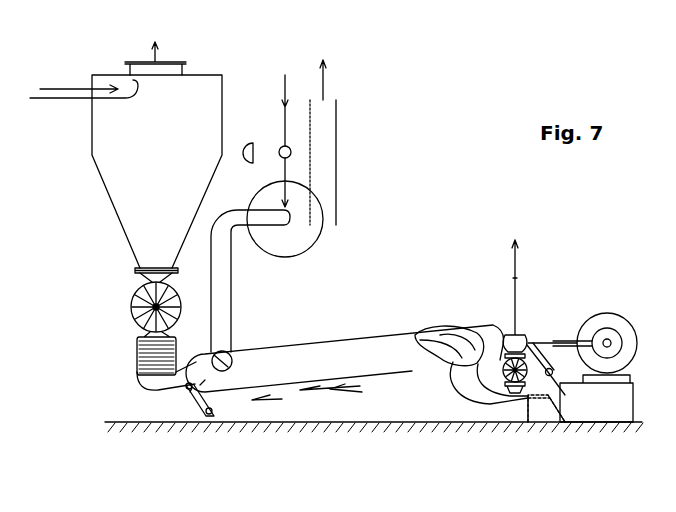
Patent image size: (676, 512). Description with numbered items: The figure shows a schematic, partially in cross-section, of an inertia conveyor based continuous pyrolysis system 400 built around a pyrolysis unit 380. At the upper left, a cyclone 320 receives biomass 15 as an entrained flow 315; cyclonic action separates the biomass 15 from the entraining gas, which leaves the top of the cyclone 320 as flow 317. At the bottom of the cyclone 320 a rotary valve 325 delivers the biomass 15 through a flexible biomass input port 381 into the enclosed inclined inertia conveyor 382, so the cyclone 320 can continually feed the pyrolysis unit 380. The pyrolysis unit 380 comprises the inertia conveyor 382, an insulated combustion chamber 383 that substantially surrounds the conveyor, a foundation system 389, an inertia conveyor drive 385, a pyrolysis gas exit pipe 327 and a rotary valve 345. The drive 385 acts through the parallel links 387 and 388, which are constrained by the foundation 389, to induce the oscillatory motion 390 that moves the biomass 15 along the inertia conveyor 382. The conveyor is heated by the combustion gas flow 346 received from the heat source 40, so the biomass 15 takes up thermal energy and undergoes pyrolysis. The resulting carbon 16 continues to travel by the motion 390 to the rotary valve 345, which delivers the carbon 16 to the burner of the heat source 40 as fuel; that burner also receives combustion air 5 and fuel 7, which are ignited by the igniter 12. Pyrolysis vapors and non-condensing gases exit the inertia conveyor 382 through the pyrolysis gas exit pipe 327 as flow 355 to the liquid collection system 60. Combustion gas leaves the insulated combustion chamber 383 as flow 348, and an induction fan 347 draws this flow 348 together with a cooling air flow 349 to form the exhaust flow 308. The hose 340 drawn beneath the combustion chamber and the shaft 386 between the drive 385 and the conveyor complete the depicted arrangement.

The combustion air 5 is at (277, 66).
The fuel 7 is at (570, 417).
The igniter 12 is at (578, 399).
The biomass 15 is at (135, 239).
The carbon 16 is at (525, 335).
The heat source 40 is at (497, 432).
The liquid collection system 60 is at (523, 224).
The exhaust flow 308 is at (337, 62).
The entrained flow 315 is at (88, 76).
The flow 317 is at (170, 41).
The cyclone 320 is at (103, 133).
The rotary valve 325 is at (123, 295).
The pyrolysis gas exit pipe 327 is at (516, 297).
The hose 340 is at (470, 390).
The rotary valve 345 is at (290, 190).
The combustion gas flow 346 is at (450, 376).
The induction fan 347 is at (306, 243).
The combustion gas flow 348 is at (232, 345).
The cooling air flow 349 is at (277, 169).
The flow 355 is at (514, 260).
The pyrolysis unit 380 is at (325, 320).
The flexible biomass input port 381 is at (130, 362).
The inertia conveyor 382 is at (148, 380).
The insulated combustion chamber 383 is at (375, 337).
The inertia conveyor drive 385 is at (608, 316).
The drive shaft 386 is at (560, 338).
The parallel link 387 is at (547, 342).
The parallel link 388 is at (198, 412).
The foundation system 389 is at (152, 421).
The oscillatory motion 390 is at (300, 398).
The pyrolysis system 400 is at (472, 100).